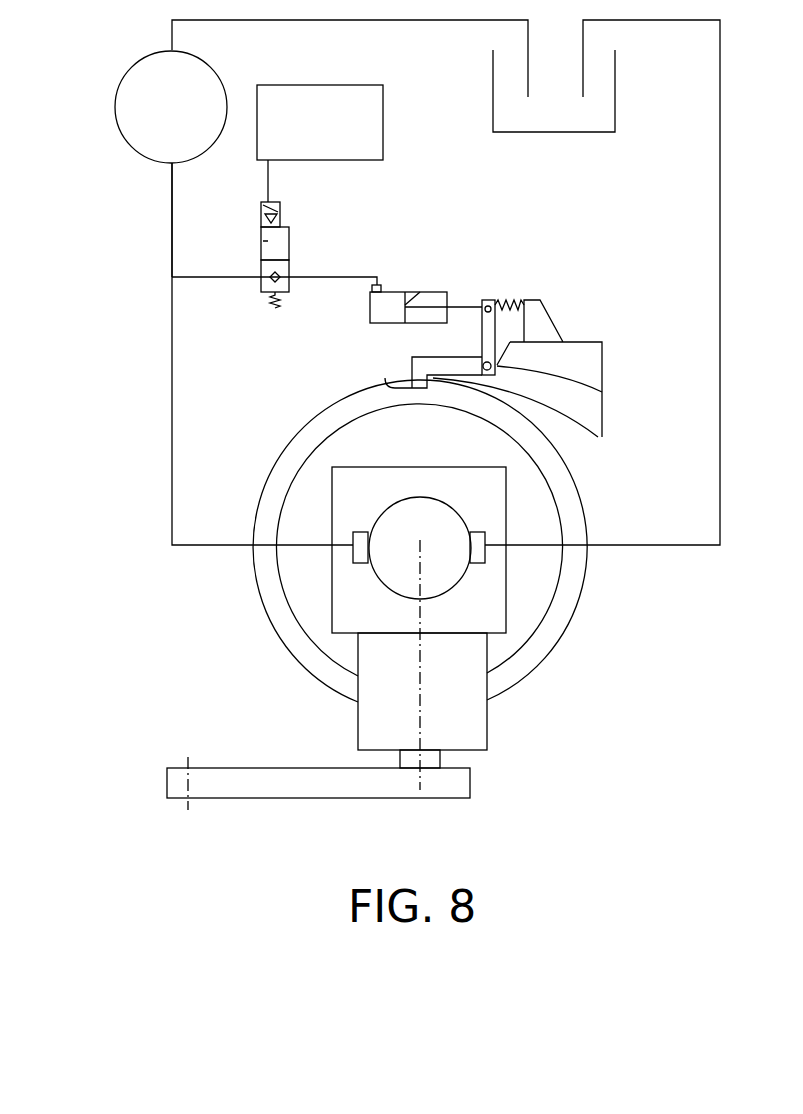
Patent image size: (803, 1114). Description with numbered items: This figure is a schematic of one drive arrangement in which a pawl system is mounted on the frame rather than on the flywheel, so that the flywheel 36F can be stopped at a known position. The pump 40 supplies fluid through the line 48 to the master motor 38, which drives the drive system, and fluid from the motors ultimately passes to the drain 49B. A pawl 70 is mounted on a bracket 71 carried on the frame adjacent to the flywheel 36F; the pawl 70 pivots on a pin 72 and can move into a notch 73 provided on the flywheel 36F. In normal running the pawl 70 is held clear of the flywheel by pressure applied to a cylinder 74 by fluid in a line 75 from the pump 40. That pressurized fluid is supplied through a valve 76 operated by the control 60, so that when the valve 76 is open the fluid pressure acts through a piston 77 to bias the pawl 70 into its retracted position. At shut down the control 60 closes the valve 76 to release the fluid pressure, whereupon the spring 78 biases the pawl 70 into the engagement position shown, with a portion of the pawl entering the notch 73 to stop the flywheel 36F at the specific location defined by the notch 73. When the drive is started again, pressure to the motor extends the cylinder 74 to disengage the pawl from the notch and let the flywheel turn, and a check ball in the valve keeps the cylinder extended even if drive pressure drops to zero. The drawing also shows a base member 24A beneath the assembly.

The pump 40 is at (128, 99).
The control device 60 is at (333, 85).
The drain 49B is at (535, 124).
The line 48 is at (172, 251).
The line 75 is at (208, 280).
The valve 76 is at (290, 252).
The cylinder 74 is at (385, 292).
The piston 77 is at (412, 306).
The pawl 70 is at (478, 300).
The spring 78 is at (508, 300).
The bracket 71 is at (578, 357).
The pin 72 is at (600, 394).
The notch 73 is at (386, 378).
The flywheel 36F is at (572, 512).
The master motor 38 is at (450, 552).
The base plate 24A is at (280, 770).